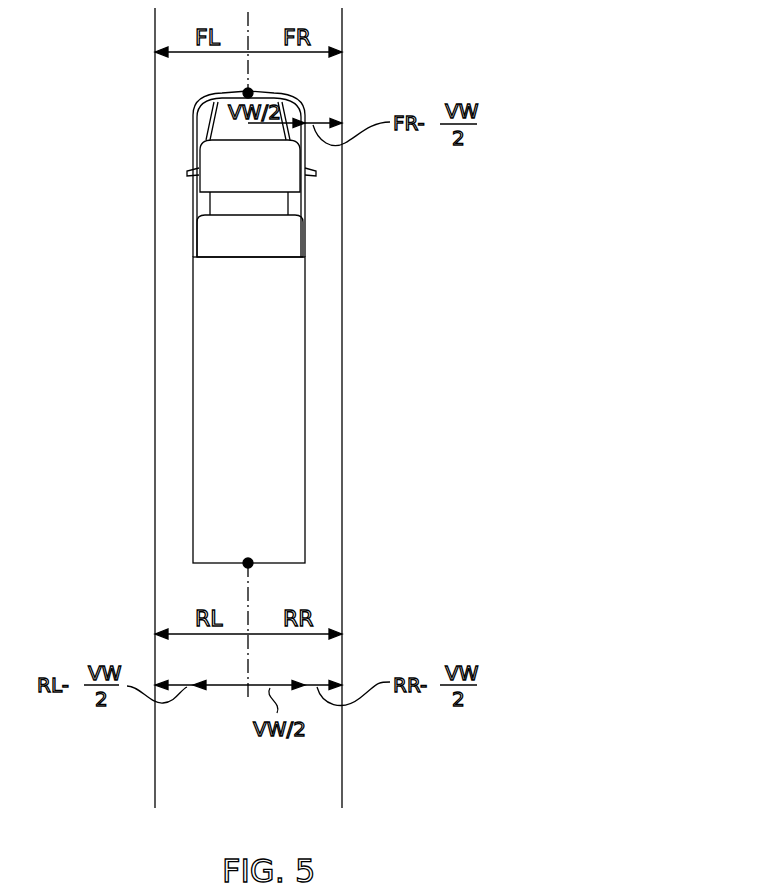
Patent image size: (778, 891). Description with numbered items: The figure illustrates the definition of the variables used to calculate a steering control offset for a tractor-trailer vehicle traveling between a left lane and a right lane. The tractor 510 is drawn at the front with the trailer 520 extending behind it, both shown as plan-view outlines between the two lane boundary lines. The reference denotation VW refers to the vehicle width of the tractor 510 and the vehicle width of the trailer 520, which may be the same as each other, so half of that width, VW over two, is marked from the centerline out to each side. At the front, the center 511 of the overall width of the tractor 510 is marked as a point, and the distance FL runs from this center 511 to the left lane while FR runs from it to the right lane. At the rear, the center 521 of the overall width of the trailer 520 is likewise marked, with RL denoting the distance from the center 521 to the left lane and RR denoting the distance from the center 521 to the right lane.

The tractor 510 is at (210, 167).
The center of the overall width of the tractor 511 is at (248, 93).
The trailer 520 is at (287, 402).
The center of the overall width of the trailer 521 is at (250, 565).